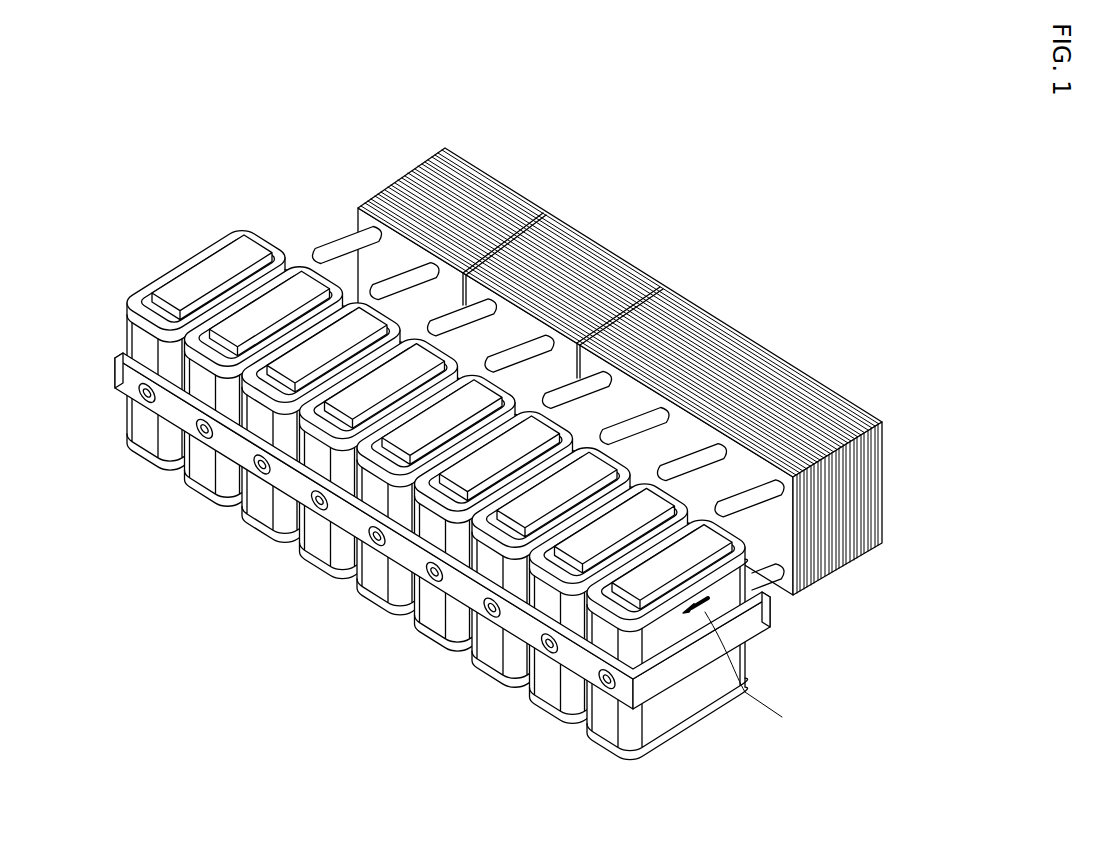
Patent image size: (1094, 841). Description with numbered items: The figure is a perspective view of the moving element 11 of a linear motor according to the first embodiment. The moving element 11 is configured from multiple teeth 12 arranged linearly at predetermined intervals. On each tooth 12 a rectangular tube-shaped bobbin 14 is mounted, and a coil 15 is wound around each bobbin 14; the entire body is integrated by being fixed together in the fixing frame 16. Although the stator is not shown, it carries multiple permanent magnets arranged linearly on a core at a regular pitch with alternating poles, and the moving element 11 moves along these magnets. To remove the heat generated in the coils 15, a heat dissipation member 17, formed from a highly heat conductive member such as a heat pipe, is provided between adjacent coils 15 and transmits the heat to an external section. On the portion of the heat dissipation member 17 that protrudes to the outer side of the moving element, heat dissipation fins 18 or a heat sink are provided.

The moving element 11 is at (539, 484).
The tooth 12 is at (720, 410).
The bobbin 14 is at (505, 575).
The coil 15 is at (510, 630).
The fixing frame 16 is at (487, 633).
The heat dissipation member 17 is at (753, 477).
The heat dissipation fins 18 is at (847, 400).